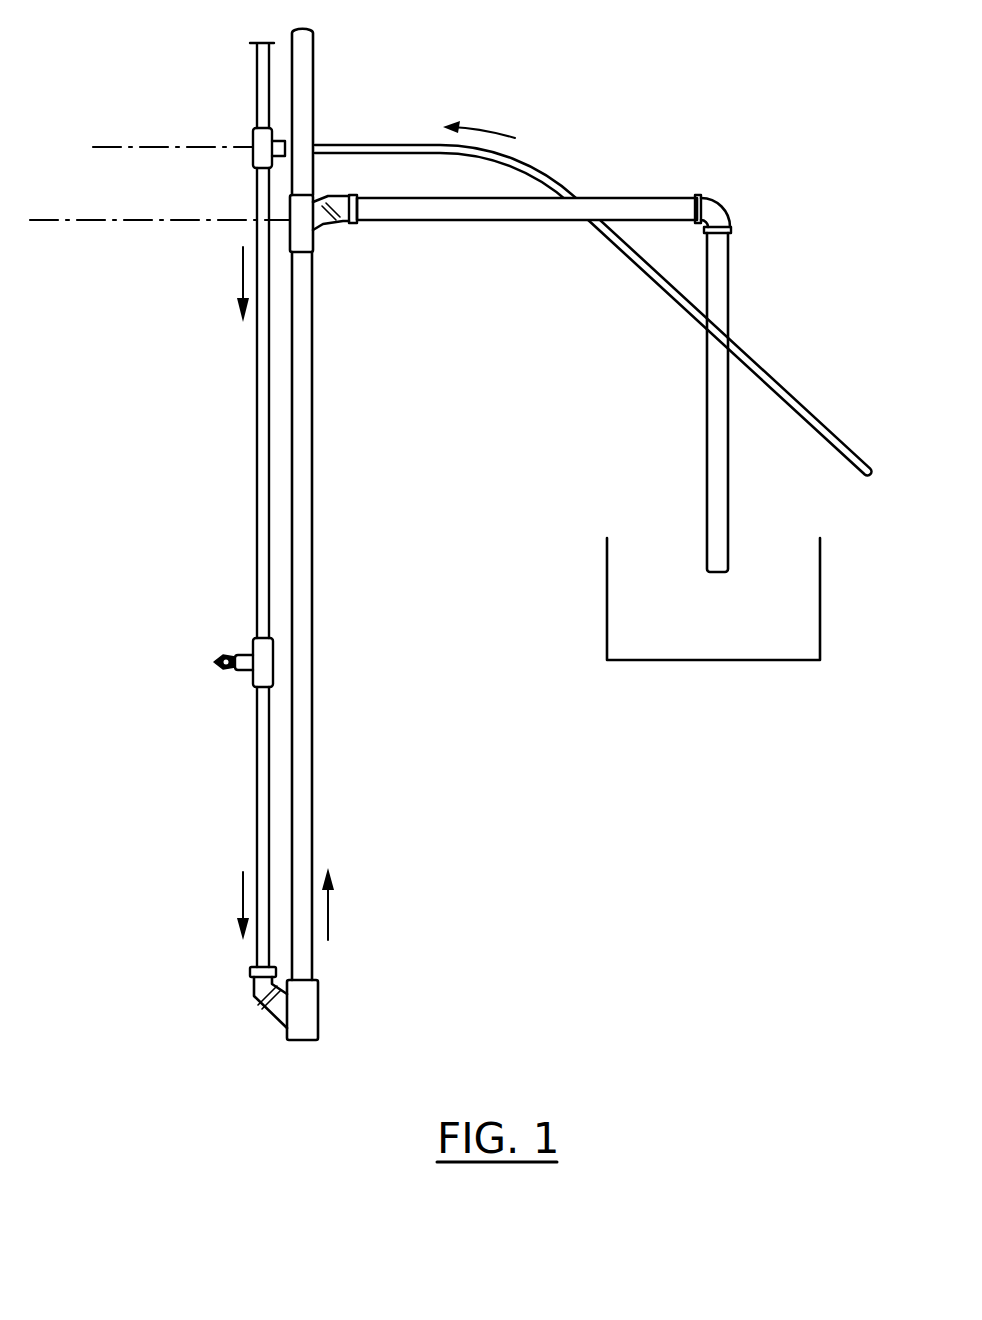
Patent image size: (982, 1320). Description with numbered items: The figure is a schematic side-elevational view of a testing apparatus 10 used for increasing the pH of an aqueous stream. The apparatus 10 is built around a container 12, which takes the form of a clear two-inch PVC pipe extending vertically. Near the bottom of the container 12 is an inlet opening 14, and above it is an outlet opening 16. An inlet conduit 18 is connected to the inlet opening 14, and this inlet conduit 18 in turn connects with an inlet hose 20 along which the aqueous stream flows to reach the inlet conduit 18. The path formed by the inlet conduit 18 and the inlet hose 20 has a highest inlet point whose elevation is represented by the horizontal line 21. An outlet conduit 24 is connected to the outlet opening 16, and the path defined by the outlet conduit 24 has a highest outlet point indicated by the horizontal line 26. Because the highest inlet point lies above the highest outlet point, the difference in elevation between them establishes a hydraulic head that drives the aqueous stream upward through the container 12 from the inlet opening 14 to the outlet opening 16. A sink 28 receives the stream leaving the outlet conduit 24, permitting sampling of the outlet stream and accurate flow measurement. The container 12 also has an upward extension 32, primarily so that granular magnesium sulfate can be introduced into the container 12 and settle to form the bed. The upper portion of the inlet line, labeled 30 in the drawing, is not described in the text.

The testing apparatus 10 is at (548, 783).
The container 12 is at (312, 818).
The inlet opening 14 is at (300, 1006).
The outlet opening 16 is at (324, 238).
The inlet conduit 18 is at (258, 807).
The inlet hose 20 is at (556, 180).
The horizontal line 21 is at (153, 146).
The outlet conduit 24 is at (721, 284).
The horizontal line 26 is at (62, 219).
The sink 28 is at (822, 646).
The upper return line section 30 is at (261, 84).
The upward extension 32 is at (303, 88).